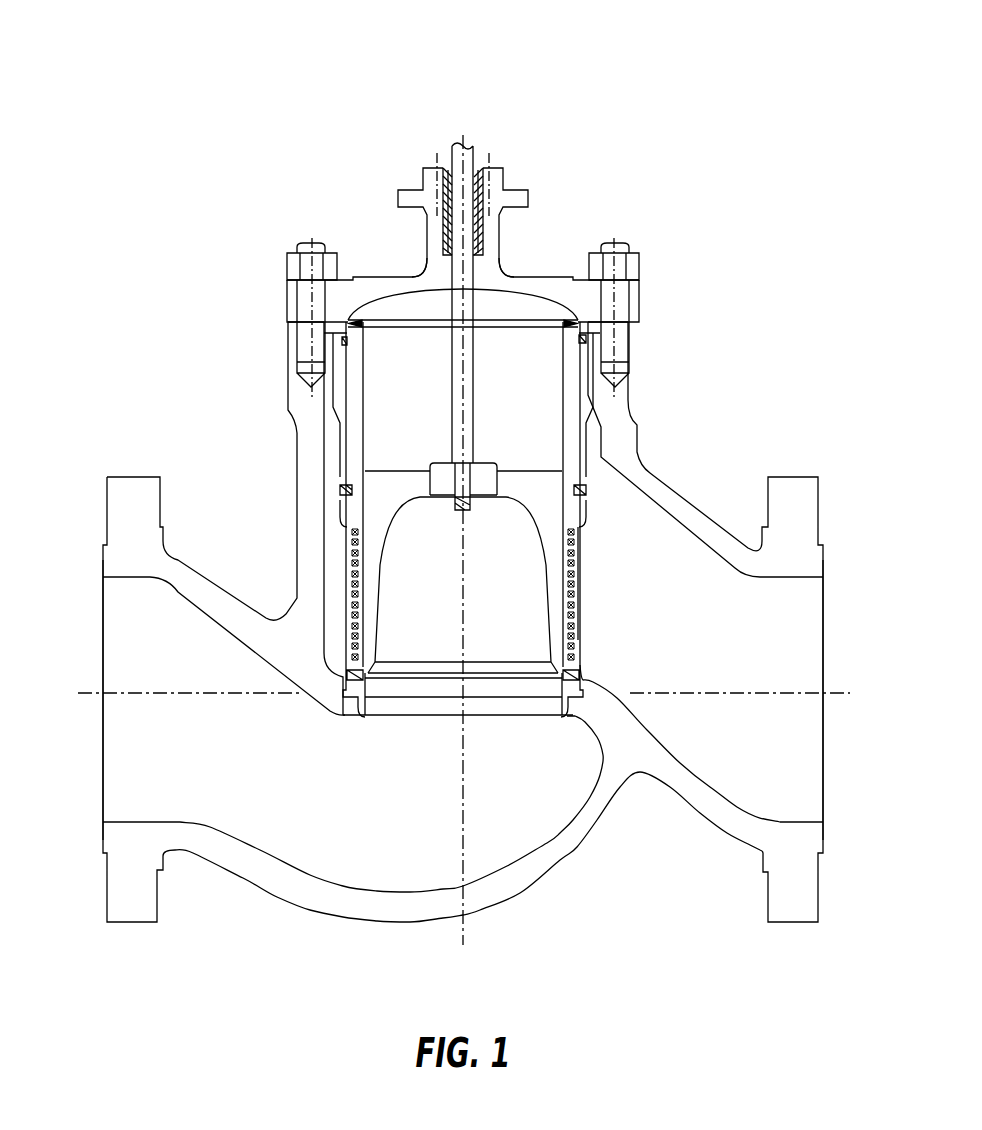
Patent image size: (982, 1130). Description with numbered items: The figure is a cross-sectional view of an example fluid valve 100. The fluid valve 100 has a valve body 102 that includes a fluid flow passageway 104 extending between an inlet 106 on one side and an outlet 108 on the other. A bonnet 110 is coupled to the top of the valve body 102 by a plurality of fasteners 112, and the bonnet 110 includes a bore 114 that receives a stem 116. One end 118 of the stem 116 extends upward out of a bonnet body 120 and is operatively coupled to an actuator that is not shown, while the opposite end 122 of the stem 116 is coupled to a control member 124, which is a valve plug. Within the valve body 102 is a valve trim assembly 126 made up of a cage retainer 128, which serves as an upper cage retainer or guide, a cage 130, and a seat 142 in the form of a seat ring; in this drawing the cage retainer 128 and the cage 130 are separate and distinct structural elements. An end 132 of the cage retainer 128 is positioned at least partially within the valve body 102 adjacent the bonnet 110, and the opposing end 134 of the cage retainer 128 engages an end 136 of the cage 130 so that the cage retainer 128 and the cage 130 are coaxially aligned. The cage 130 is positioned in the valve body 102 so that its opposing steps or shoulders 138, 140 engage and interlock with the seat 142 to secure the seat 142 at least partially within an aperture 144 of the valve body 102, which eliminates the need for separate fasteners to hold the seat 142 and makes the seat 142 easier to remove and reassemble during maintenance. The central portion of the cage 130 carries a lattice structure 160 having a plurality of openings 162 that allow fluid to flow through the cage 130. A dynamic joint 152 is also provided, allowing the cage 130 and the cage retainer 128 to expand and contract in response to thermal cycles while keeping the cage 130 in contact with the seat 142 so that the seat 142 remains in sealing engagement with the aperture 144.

The fluid valve 100 is at (645, 66).
The valve body 102 is at (459, 622).
The fluid flow passageway 104 is at (140, 674).
The inlet 106 is at (103, 735).
The outlet 108 is at (823, 738).
The bonnet 110 is at (412, 268).
The fasteners 112 is at (300, 247).
The bore 114 is at (447, 192).
The stem 116 is at (468, 192).
The end of the stem 118 is at (455, 143).
The bonnet body 120 is at (513, 265).
The opposite end of the stem 122 is at (465, 461).
The control member 124 is at (445, 539).
The valve trim assembly 126 is at (452, 359).
The cage retainer 128 is at (570, 400).
The cage 130 is at (350, 602).
The end of the cage retainer 132 is at (578, 355).
The opposing end of the cage retainer 134 is at (618, 480).
The end of the cage 136 is at (574, 515).
The step or shoulder of the cage 138 is at (583, 660).
The step or shoulder of the cage 140 is at (556, 661).
The seat 142 is at (562, 718).
The aperture of the valve body 144 is at (375, 715).
The dynamic joint 152 is at (340, 313).
The lattice structure 160 is at (574, 580).
The openings 162 is at (574, 610).